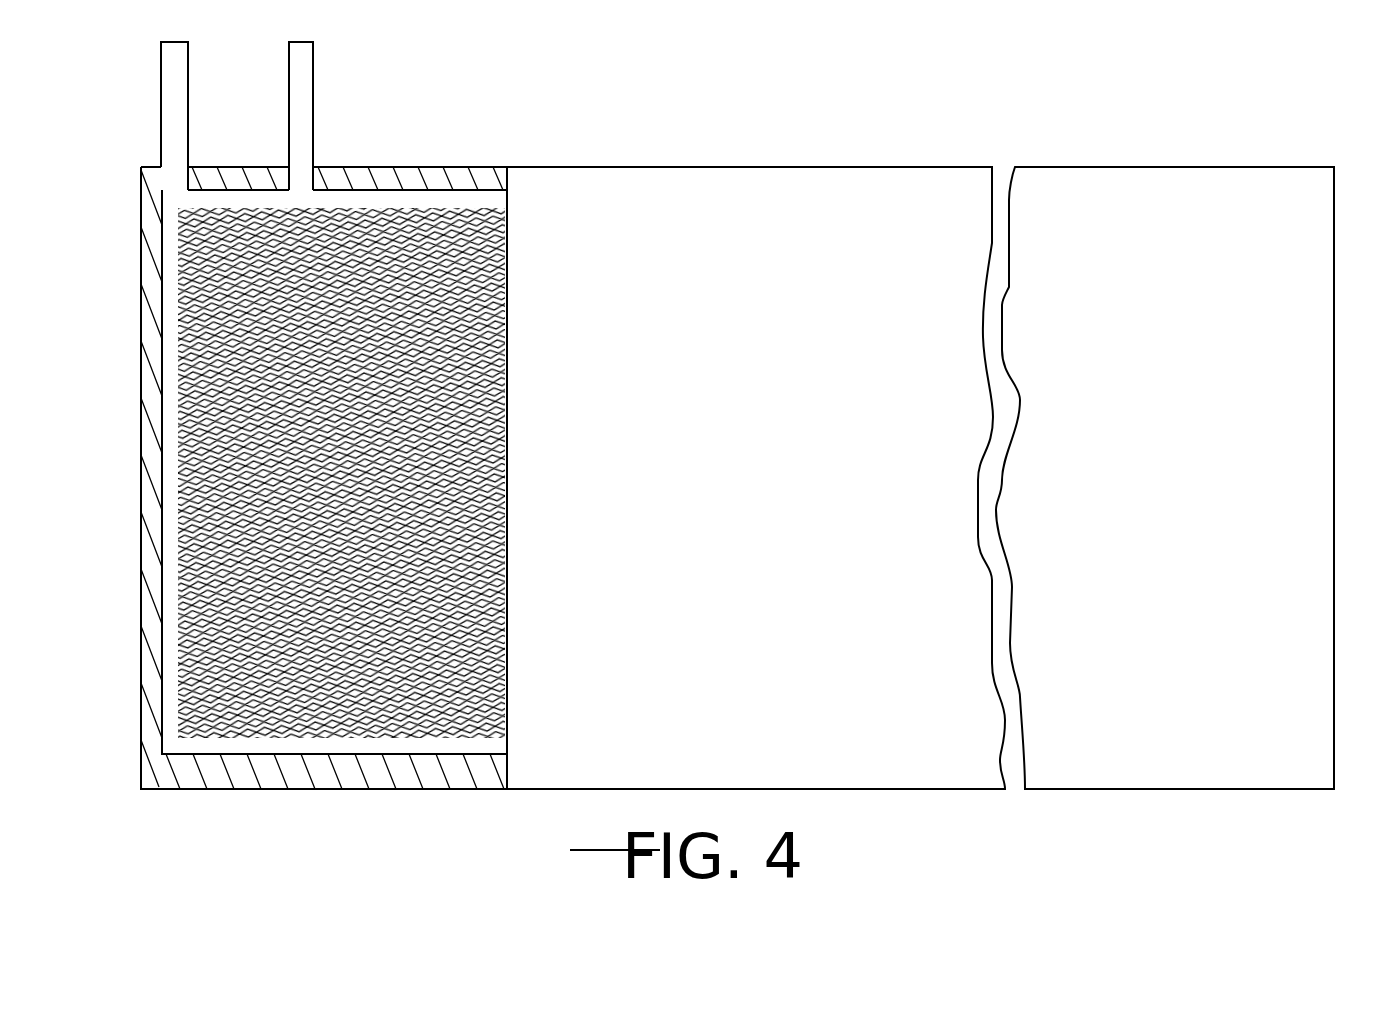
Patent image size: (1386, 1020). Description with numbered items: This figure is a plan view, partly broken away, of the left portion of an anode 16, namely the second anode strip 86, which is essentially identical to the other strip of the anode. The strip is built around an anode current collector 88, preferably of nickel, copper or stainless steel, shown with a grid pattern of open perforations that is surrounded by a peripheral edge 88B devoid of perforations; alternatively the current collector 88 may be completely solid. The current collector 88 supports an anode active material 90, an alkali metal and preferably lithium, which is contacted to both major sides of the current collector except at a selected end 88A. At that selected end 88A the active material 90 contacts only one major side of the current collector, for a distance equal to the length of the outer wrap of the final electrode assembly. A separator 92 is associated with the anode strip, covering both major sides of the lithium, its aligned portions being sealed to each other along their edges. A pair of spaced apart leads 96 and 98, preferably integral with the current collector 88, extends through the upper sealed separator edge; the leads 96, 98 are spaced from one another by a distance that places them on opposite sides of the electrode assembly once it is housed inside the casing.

The anode 16 is at (1048, 136).
The second anode strip 86 is at (873, 160).
The anode current collector 88 is at (340, 200).
The selected end 88A is at (193, 632).
The peripheral edge 88B is at (435, 179).
The anode active material 90 is at (542, 772).
The separator 92 is at (1336, 340).
The lead 96 is at (178, 70).
The lead 98 is at (302, 62).